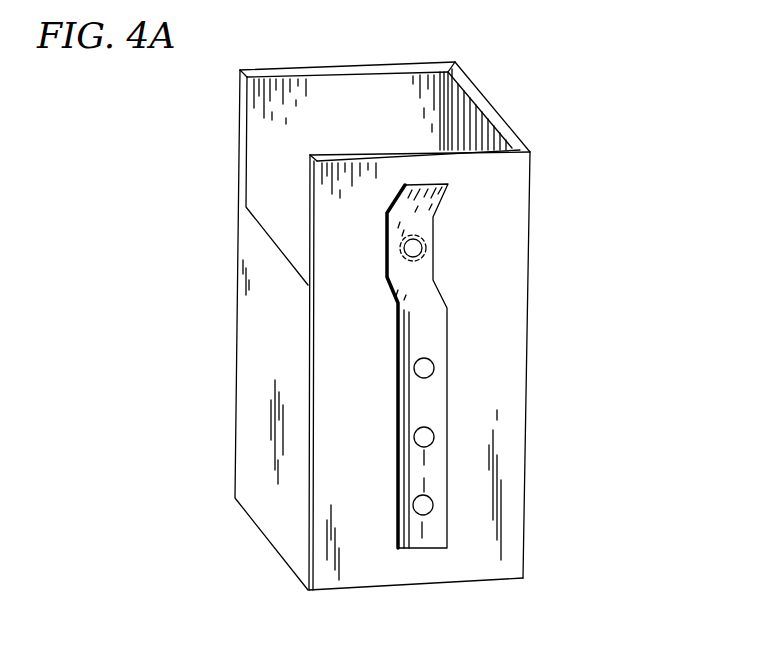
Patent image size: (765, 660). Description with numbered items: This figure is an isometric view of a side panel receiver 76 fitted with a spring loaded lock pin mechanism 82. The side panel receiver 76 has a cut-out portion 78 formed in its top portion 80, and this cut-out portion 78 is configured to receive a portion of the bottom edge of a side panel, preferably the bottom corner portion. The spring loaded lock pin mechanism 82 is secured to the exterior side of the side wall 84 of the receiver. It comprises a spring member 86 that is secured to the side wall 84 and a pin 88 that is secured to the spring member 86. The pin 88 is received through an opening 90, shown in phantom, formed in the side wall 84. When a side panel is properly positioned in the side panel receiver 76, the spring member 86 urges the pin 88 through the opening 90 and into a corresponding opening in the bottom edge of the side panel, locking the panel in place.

The side panel receiver 76 is at (392, 302).
The cut-out portion 78 is at (272, 154).
The top portion 80 is at (375, 86).
The spring loaded lock pin mechanism 82 is at (489, 366).
The side wall 84 is at (520, 192).
The spring member 86 is at (430, 473).
The pin 88 is at (418, 251).
The opening 90 is at (428, 243).